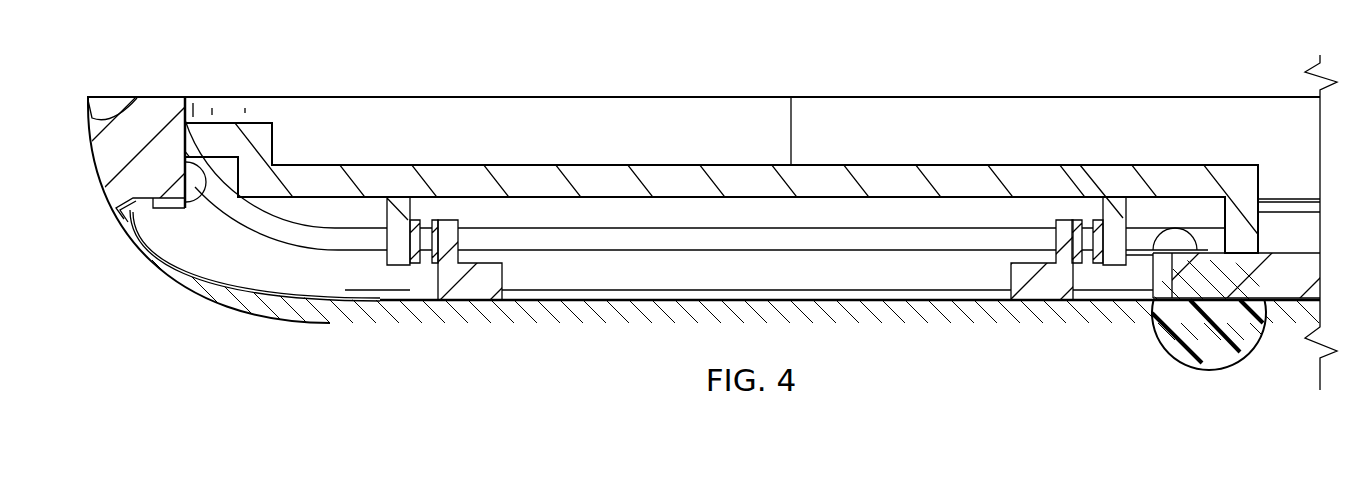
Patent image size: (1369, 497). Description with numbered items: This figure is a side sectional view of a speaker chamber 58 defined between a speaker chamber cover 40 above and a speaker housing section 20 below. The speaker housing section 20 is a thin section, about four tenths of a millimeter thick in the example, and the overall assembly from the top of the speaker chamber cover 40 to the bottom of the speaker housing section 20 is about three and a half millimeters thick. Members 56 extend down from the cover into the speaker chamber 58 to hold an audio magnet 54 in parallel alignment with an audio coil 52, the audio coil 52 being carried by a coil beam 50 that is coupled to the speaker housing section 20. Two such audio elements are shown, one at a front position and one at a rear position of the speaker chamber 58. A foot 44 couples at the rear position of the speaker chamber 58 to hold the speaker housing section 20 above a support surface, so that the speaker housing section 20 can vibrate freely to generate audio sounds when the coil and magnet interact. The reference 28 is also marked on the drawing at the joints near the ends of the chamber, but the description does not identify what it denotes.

The speaker housing section 20 is at (549, 312).
The seal 28 is at (190, 204).
The speaker chamber cover 40 is at (335, 172).
The foot 44 is at (1223, 358).
The coil beam 50 is at (473, 290).
The audio coil 52 is at (433, 220).
The audio magnet 54 is at (415, 262).
The members 56 is at (397, 238).
The speaker chamber 58 is at (945, 267).